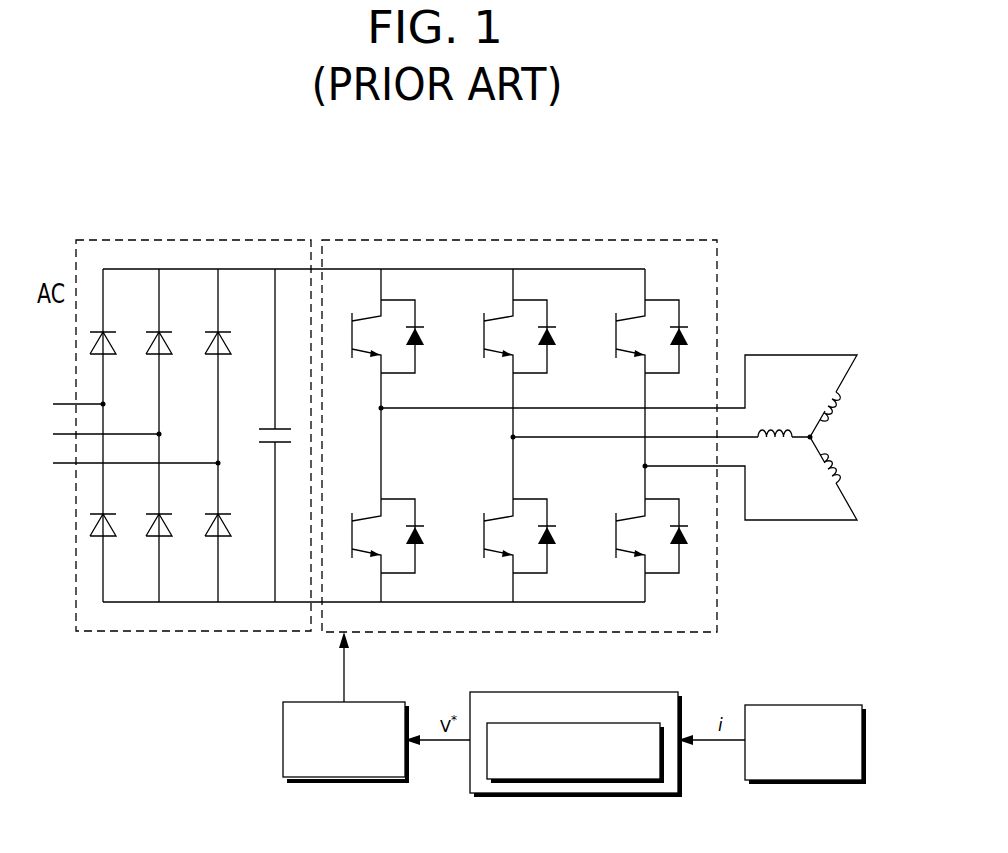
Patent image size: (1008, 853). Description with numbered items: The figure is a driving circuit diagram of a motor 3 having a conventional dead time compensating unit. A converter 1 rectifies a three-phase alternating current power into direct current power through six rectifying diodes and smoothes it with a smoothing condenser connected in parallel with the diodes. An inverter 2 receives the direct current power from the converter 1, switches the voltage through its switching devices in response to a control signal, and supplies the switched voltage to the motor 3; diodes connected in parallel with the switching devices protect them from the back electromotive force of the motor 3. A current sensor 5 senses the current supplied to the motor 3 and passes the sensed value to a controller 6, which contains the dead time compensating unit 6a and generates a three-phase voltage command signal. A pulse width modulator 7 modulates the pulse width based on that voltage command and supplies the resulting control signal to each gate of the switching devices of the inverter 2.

The converter 1 is at (208, 240).
The inverter 2 is at (513, 240).
The motor 3 is at (823, 440).
The current sensor 5 is at (815, 781).
The controller 6 is at (537, 794).
The dead time compensating unit 6a is at (614, 794).
The pulse width modulator (PWM) 7 is at (348, 778).